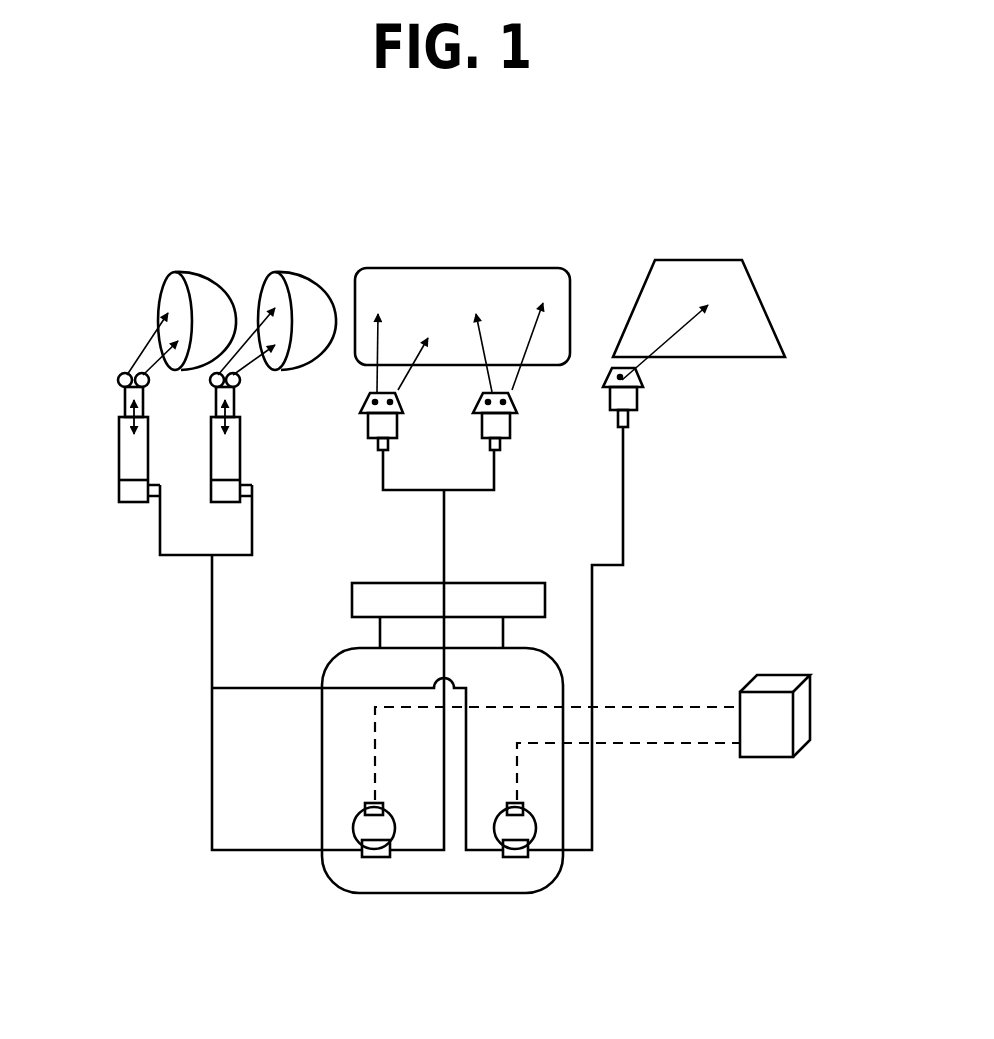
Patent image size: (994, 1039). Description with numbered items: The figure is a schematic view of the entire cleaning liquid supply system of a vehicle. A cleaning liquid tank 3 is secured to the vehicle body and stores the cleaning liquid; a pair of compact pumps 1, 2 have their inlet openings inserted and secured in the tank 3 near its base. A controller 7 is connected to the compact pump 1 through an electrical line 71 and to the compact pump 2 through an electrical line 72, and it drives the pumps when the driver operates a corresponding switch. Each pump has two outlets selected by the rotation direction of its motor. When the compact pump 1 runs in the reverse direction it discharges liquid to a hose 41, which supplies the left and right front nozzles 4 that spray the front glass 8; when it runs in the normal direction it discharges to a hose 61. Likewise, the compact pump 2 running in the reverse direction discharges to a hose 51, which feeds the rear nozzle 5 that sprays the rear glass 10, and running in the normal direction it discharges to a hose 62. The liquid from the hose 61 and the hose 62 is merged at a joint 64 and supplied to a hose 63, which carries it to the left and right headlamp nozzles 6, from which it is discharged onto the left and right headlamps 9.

The compact pump 1 is at (374, 858).
The compact pump 2 is at (515, 858).
The cleaning liquid tank 3 is at (532, 880).
The front nozzles 4 is at (478, 411).
The hose 41 is at (444, 532).
The rear nozzle 5 is at (625, 398).
The hose 51 is at (625, 487).
The headlamp nozzles 6 is at (222, 397).
The hose 61 is at (212, 805).
The hose 62 is at (275, 688).
The hose 63 is at (212, 620).
The joint 64 is at (212, 690).
The controller 7 is at (805, 707).
The electrical line 71 is at (658, 707).
The electrical line 72 is at (663, 743).
The front glass 8 is at (497, 295).
The headlamps 9 is at (190, 277).
The rear glass 10 is at (690, 285).